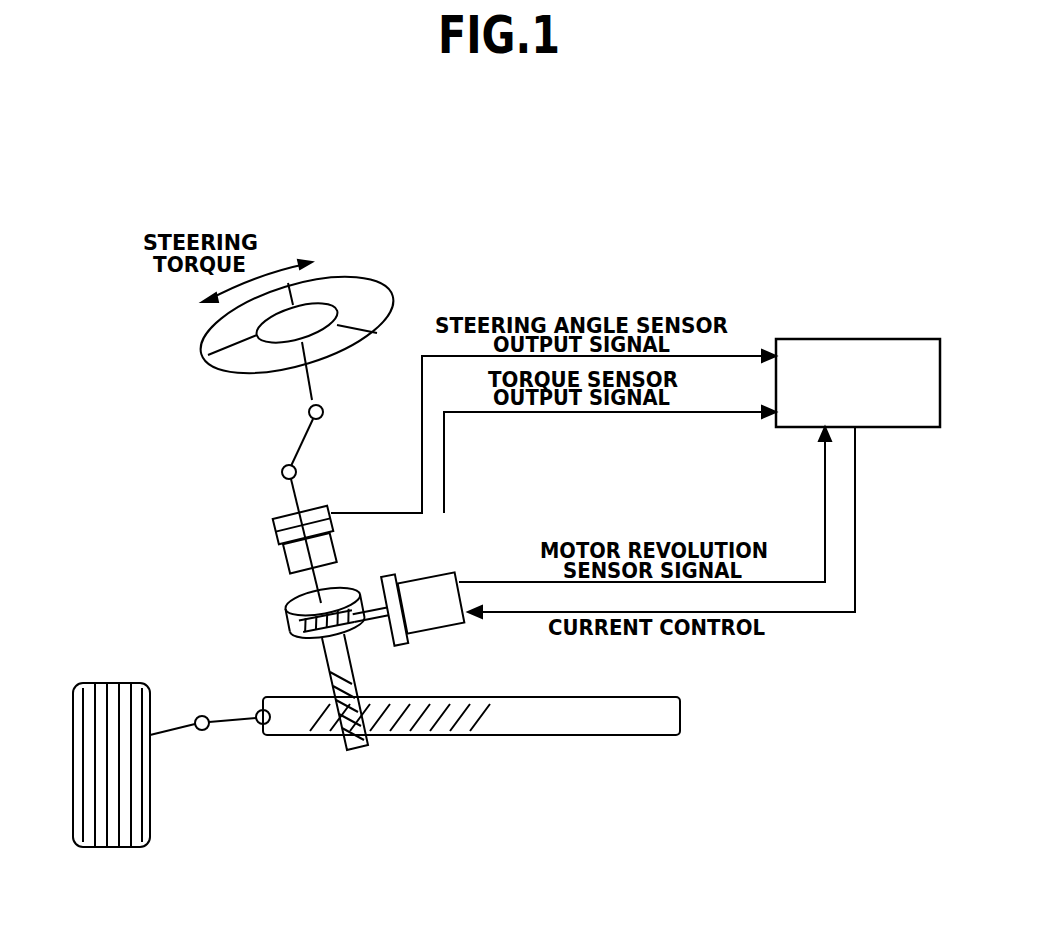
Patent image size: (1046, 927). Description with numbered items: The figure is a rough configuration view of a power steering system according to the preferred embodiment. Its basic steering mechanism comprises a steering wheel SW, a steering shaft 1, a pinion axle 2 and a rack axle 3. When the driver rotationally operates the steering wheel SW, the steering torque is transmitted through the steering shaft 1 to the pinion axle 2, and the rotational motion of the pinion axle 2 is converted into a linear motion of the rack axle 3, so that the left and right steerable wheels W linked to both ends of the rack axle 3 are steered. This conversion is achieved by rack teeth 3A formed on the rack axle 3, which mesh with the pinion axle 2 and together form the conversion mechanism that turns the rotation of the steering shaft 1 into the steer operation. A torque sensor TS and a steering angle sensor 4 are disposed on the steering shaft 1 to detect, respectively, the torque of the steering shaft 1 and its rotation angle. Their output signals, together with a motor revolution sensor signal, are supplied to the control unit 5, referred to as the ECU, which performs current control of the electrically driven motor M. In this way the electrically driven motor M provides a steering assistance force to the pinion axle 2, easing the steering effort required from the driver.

The steering wheel SW is at (375, 283).
The steering shaft 1 is at (290, 497).
The steering angle sensor 4 is at (272, 527).
The torque sensor TS is at (280, 564).
The electrically driven motor M is at (432, 590).
The control unit (ECU) 5 is at (847, 347).
The pinion axle 2 is at (327, 672).
The rack axle 3 is at (553, 736).
The rack teeth 3A is at (450, 705).
The steerable wheels W is at (113, 694).